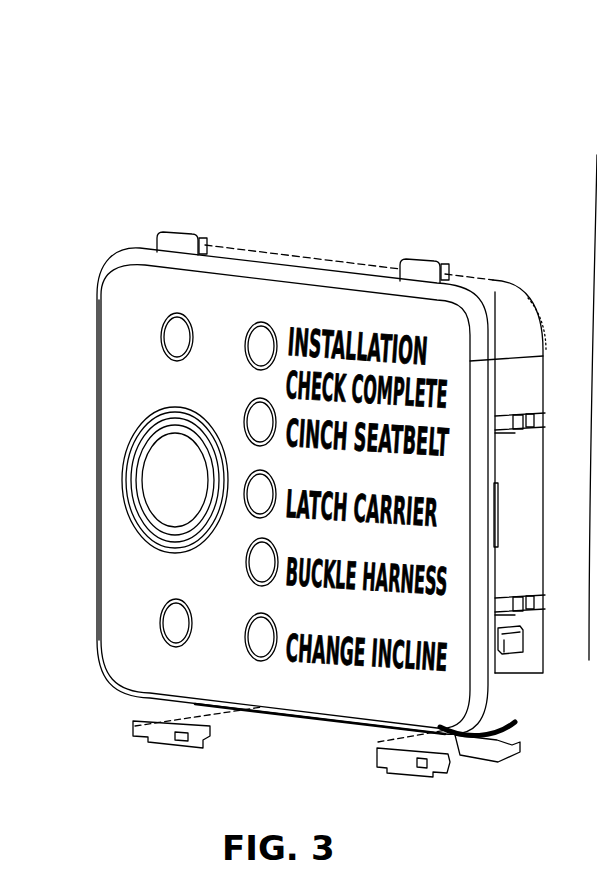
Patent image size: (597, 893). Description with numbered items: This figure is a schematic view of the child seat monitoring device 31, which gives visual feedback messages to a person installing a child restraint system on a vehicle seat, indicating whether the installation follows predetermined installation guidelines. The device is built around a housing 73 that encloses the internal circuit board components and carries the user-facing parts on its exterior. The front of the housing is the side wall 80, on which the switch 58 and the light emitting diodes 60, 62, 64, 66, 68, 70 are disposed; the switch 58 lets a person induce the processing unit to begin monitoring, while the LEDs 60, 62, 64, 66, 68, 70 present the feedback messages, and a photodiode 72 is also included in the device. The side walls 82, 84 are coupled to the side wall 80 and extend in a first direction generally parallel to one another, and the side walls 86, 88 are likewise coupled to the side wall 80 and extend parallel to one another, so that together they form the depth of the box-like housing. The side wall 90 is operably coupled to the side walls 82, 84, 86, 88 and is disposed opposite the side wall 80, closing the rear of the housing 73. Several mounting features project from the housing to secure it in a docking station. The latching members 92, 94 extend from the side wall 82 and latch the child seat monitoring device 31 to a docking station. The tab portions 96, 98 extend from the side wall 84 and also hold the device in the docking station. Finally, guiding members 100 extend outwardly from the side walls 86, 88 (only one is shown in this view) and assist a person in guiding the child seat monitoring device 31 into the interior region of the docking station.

The child seat monitoring device 31 is at (318, 200).
The switch 58 is at (138, 477).
The light emitting diode 60 is at (264, 338).
The light emitting diode 62 is at (260, 421).
The light emitting diode 64 is at (258, 512).
The light emitting diode 66 is at (266, 578).
The light emitting diode 68 is at (256, 652).
The light emitting diode 70 is at (173, 318).
The photodiode 72 is at (170, 637).
The housing 73 is at (517, 289).
The side wall 80 is at (106, 270).
The side wall 82 is at (338, 722).
The side wall 84 is at (357, 263).
The side wall 86 is at (528, 543).
The side wall 88 is at (96, 606).
The side wall 90 is at (502, 743).
The latching member 92 is at (172, 740).
The latching member 94 is at (405, 766).
The tab portion 96 is at (175, 237).
The tab portion 98 is at (433, 262).
The guiding member 100 is at (521, 648).